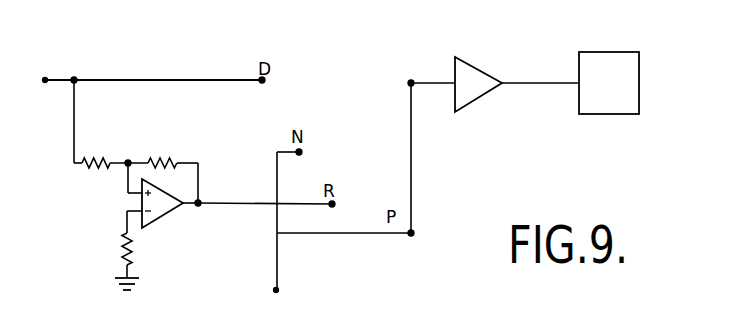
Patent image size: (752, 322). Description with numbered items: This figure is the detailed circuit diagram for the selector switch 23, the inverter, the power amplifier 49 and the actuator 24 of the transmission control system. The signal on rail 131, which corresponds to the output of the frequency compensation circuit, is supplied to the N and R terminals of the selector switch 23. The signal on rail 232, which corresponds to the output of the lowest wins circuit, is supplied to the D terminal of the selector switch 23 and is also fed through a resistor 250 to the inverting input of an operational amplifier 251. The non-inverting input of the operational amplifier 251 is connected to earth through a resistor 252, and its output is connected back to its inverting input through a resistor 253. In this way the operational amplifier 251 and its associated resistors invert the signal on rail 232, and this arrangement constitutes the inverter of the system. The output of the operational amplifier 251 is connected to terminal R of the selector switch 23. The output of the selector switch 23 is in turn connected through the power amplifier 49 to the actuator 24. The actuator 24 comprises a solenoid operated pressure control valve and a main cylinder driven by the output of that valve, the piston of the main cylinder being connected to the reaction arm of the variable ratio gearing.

The selector switch 23 is at (360, 118).
The rail 232 is at (104, 80).
The resistor 250 is at (97, 159).
The resistor 253 is at (164, 160).
The resistor 252 is at (121, 253).
The operational amplifier 251 is at (165, 205).
The rail 131 is at (277, 265).
The power amplifier 49 is at (473, 87).
The actuator 24 is at (606, 107).